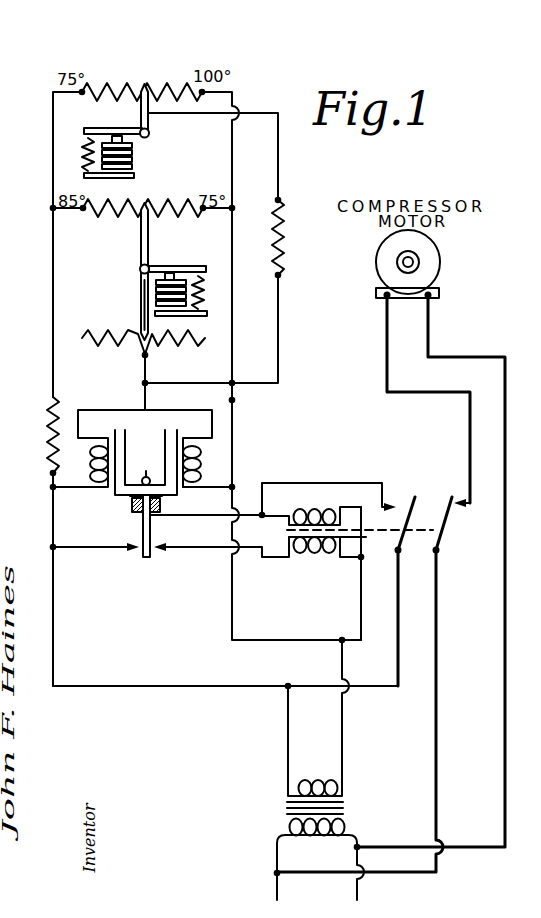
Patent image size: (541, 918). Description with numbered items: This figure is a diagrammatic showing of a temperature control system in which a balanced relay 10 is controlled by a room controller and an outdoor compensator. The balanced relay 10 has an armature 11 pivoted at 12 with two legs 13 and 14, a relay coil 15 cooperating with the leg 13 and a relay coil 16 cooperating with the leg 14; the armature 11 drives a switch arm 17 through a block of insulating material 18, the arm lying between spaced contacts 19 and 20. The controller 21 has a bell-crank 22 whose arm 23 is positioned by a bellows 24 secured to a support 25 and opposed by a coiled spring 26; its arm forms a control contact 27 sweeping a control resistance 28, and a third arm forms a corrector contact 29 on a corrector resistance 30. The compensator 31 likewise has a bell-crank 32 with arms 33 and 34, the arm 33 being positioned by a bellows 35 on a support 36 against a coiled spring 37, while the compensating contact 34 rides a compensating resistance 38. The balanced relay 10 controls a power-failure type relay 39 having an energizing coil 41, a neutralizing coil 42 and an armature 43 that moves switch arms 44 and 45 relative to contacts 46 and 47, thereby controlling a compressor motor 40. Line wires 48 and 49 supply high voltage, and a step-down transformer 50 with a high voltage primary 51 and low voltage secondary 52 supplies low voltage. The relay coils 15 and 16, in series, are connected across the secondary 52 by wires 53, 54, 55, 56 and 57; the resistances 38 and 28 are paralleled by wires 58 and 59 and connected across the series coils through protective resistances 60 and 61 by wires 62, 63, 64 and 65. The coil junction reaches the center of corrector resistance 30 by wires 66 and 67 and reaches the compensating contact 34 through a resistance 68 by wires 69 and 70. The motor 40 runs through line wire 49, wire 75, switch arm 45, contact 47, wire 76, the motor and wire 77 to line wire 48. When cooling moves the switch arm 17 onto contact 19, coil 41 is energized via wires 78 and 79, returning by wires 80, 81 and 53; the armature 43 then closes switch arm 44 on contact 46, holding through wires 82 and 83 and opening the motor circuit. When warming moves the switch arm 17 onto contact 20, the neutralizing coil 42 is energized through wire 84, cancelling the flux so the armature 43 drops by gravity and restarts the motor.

The balanced relay 10 is at (142, 454).
The armature 11 is at (122, 498).
The pivot 12 is at (146, 477).
The leg 13 is at (122, 450).
The leg 14 is at (170, 441).
The relay coil 15 is at (98, 458).
The relay coil 16 is at (201, 464).
The switch arm 17 is at (151, 531).
The block of insulating material 18 is at (140, 511).
The contact 19 is at (132, 552).
The contact 20 is at (163, 552).
The controller 21 is at (149, 278).
The bell-crank 22 is at (140, 270).
The arm 23 is at (163, 267).
The bellows 24 is at (178, 284).
The support 25 is at (208, 317).
The coiled spring 26 is at (204, 294).
The control contact 27 is at (150, 252).
The control resistance 28 is at (128, 208).
The corrector contact 29 is at (145, 308).
The corrector resistance 30 is at (112, 345).
The compensator 31 is at (137, 136).
The bell-crank 32 is at (149, 136).
The arm 33 is at (88, 131).
The compensating contact 34 is at (141, 101).
The bellows 35 is at (132, 162).
The support 36 is at (134, 175).
The coiled spring 37 is at (90, 156).
The compensating resistance 38 is at (143, 80).
The power-failure type relay 39 is at (357, 560).
The motor 40 is at (430, 264).
The energizing coil 41 is at (330, 508).
The neutralizing coil 42 is at (317, 552).
The armature 43 is at (407, 536).
The switch arm 44 is at (415, 498).
The switch arm 45 is at (438, 495).
The contact 46 is at (393, 505).
The contact 47 is at (453, 508).
The line wire 48 is at (360, 889).
The line wire 49 is at (279, 889).
The step-down transformer 50 is at (285, 811).
The high voltage primary 51 is at (318, 838).
The low voltage secondary 52 is at (317, 779).
The wire 53 is at (345, 746).
The wire 54 is at (233, 612).
The wire 55 is at (53, 530).
The wire 56 is at (57, 657).
The wire 57 is at (285, 745).
The wire 58 is at (233, 170).
The wire 59 is at (53, 146).
The protective resistance 60 is at (236, 438).
The protective resistance 61 is at (50, 426).
The wire 62 is at (233, 316).
The wire 63 is at (235, 486).
The wire 64 is at (53, 298).
The wire 65 is at (53, 480).
The wire 66 is at (143, 399).
The wire 67 is at (148, 367).
The resistance 68 is at (285, 246).
The wire 69 is at (282, 320).
The wire 70 is at (278, 113).
The wire 75 is at (438, 762).
The wire 76 is at (387, 366).
The wire 77 is at (433, 356).
The wire 78 is at (86, 549).
The wire 79 is at (197, 505).
The wire 80 is at (366, 544).
The wire 81 is at (361, 598).
The wire 82 is at (307, 684).
The wire 83 is at (327, 483).
The wire 84 is at (268, 558).